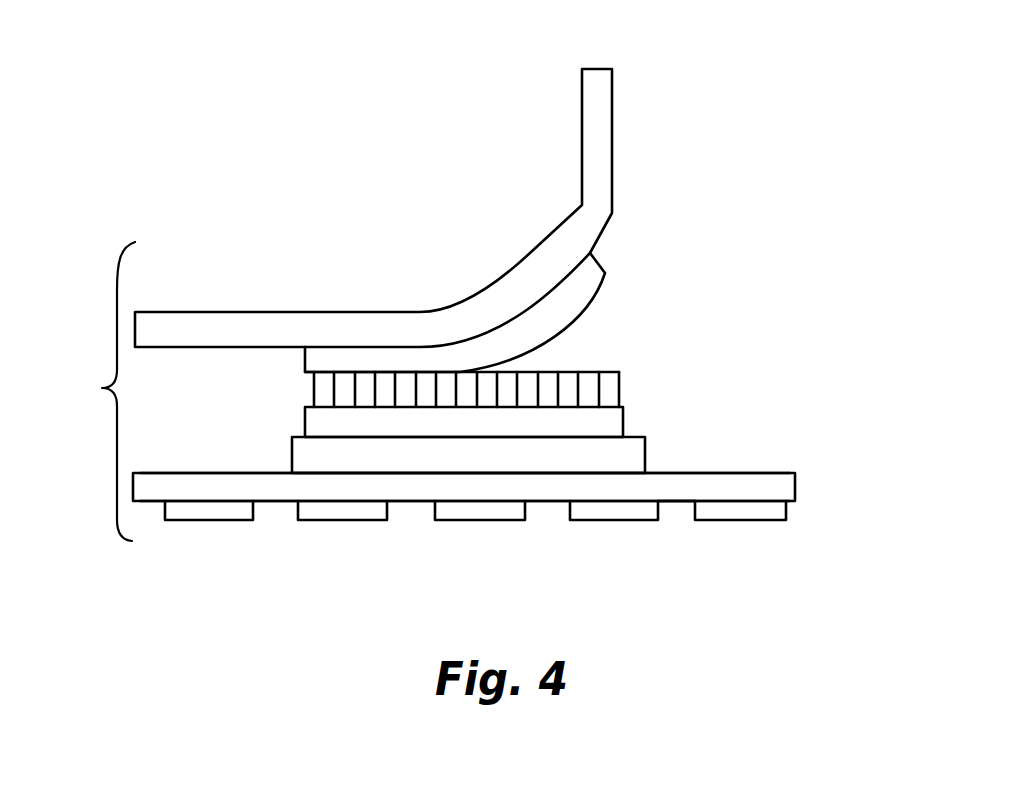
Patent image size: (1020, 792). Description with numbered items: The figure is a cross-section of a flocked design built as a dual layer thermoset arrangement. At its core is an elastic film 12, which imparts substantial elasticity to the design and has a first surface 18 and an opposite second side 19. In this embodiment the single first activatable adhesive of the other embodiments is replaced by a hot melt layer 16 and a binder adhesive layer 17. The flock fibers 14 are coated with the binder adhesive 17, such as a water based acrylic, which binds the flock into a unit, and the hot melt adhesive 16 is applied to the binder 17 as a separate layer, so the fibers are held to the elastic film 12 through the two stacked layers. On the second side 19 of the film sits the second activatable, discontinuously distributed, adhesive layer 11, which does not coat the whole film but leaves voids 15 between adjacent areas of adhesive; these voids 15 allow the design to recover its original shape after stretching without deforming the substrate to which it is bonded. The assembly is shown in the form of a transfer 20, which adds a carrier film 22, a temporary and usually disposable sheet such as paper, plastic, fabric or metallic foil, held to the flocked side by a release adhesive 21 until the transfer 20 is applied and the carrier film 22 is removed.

The second activatable, discontinuously distributed, adhesive layer 11 is at (768, 521).
The elastic film 12 is at (795, 488).
The flock fibers 14 is at (620, 390).
The voids 15 is at (678, 512).
The hot melt layer 16 is at (645, 455).
The binder adhesive layer 17 is at (623, 422).
The first surface of the elastic film 18 is at (197, 473).
The second side of the elastic film 19 is at (150, 501).
The transfer 20 is at (100, 388).
The release adhesive 21 is at (588, 298).
The carrier film 22 is at (612, 178).